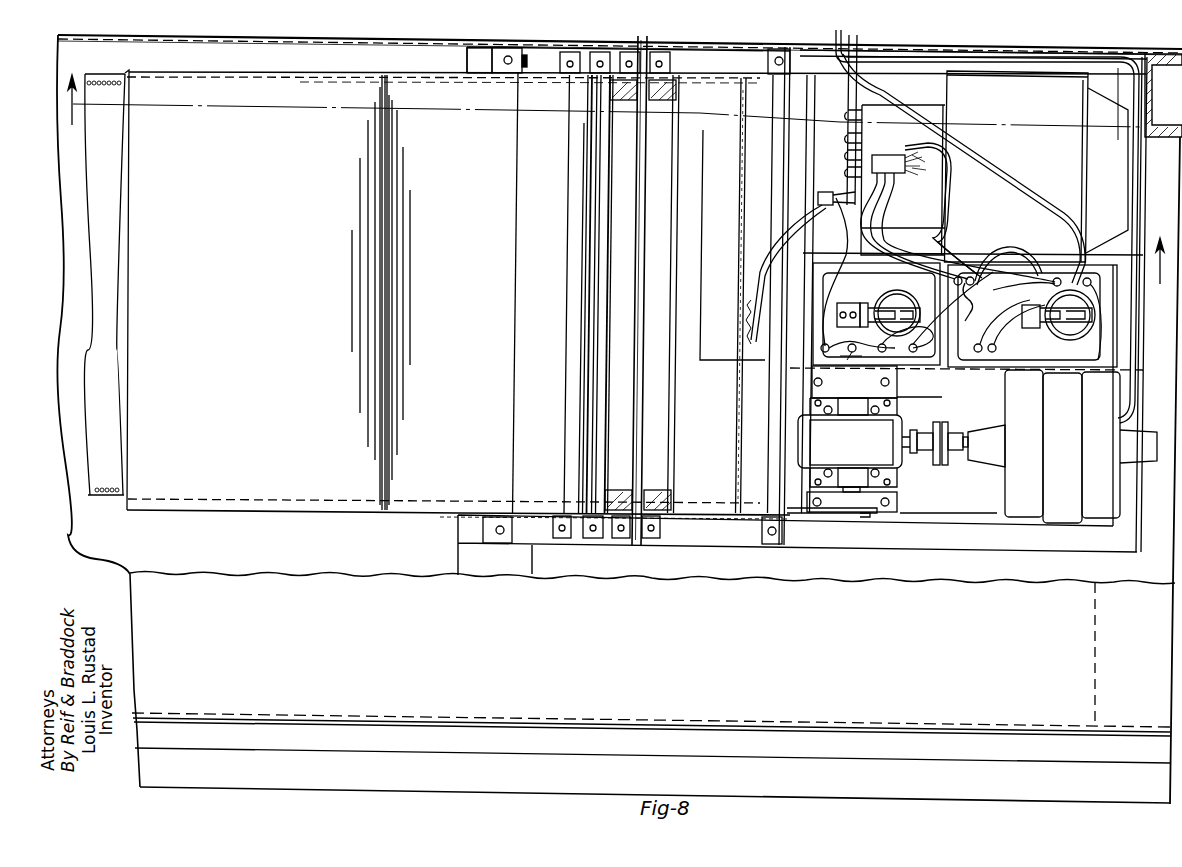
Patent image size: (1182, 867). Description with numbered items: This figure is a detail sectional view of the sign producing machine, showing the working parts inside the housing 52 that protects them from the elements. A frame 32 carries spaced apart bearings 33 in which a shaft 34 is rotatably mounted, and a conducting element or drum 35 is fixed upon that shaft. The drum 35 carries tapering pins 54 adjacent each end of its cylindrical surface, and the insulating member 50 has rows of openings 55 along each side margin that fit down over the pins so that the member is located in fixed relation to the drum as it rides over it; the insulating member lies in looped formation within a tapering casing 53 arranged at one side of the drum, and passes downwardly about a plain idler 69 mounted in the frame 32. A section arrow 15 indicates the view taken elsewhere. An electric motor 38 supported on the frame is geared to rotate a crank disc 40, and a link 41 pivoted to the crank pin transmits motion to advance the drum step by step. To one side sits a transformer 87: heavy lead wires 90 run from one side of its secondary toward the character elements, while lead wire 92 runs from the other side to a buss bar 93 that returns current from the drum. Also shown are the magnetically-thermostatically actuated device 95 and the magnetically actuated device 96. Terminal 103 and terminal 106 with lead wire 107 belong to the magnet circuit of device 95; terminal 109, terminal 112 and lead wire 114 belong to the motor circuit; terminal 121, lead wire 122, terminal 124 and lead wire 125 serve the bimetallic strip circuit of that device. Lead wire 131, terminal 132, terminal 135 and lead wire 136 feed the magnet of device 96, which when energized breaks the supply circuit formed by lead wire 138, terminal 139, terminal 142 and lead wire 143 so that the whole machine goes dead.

The section line 15 is at (615, 167).
The frame 32 is at (778, 76).
The bearings 33 is at (678, 64).
The shaft 34 is at (636, 375).
The conducting element or drum 35 is at (605, 401).
The electric motor 38 is at (1045, 447).
The crank disc 40 is at (870, 500).
The link 41 is at (852, 520).
The insulating member 50 is at (117, 72).
The housing 52 is at (426, 46).
The tapering casing 53 is at (300, 494).
The tapering pins 54 is at (684, 93).
The openings 55 is at (102, 100).
The plain idler 69 is at (566, 484).
The transformer 87 is at (1037, 165).
The lead wires 90 is at (928, 156).
The lead wire 92 is at (770, 234).
The buss bar 93 is at (740, 246).
The magnetically-thermostatically actuated device 95 is at (1072, 335).
The magnetically actuated device 96 is at (890, 302).
The terminal 103 is at (958, 275).
The terminal 106 is at (971, 275).
The lead wire 107 is at (974, 296).
The terminal 109 is at (1066, 276).
The terminal 112 is at (1088, 276).
The lead wire 114 is at (926, 58).
The terminal 121 is at (978, 354).
The lead wire 122 is at (1010, 340).
The terminal 124 is at (1010, 372).
The lead wire 125 is at (893, 202).
The lead wire 131 is at (833, 295).
The terminal 132 is at (821, 348).
The terminal 135 is at (848, 355).
The lead wire 136 is at (877, 382).
The lead wire 138 is at (1014, 243).
The terminal 139 is at (886, 354).
The terminal 142 is at (918, 354).
The lead wire 143 is at (834, 31).